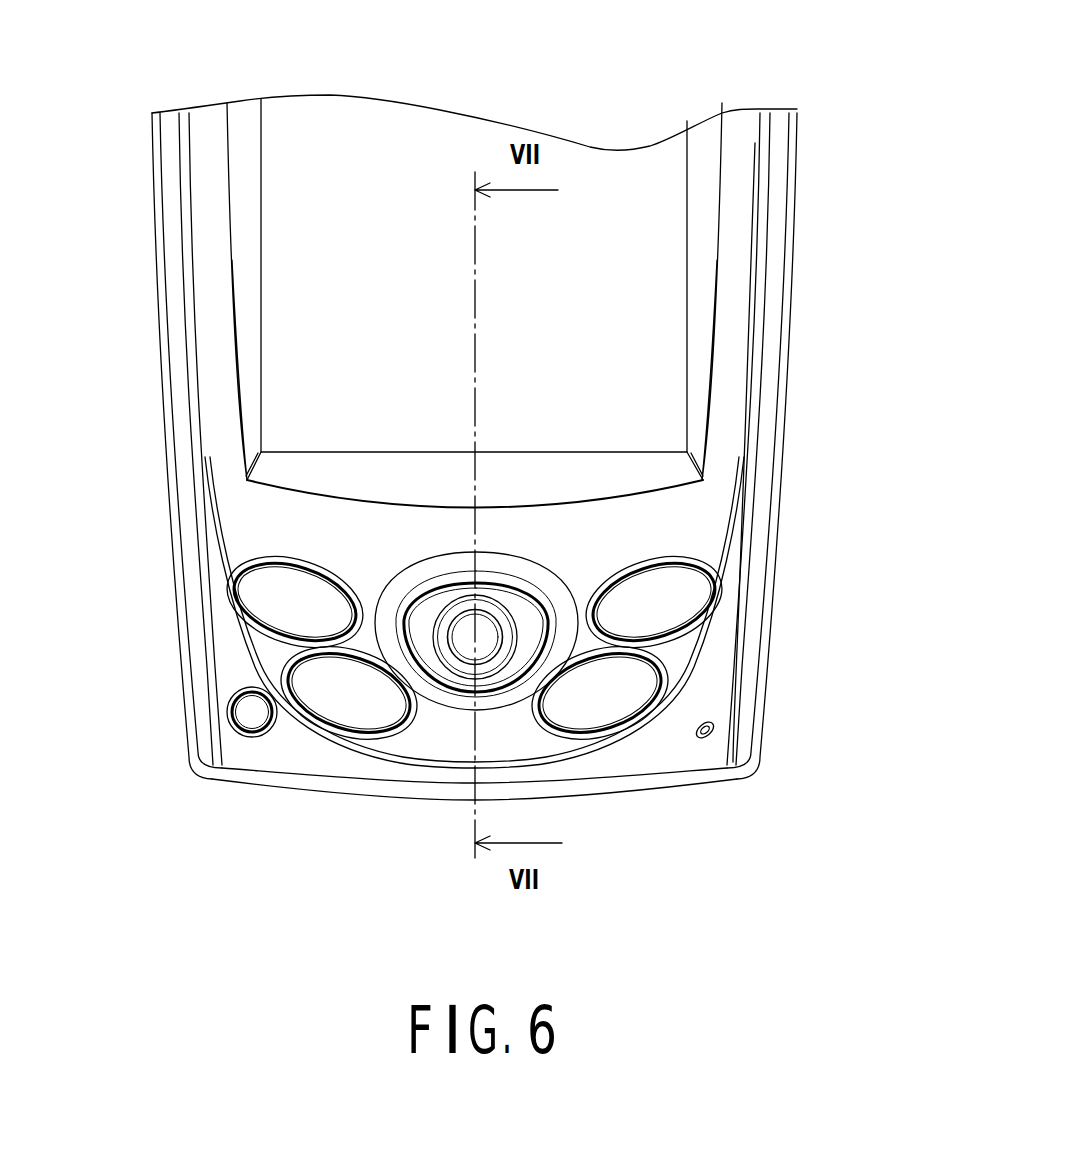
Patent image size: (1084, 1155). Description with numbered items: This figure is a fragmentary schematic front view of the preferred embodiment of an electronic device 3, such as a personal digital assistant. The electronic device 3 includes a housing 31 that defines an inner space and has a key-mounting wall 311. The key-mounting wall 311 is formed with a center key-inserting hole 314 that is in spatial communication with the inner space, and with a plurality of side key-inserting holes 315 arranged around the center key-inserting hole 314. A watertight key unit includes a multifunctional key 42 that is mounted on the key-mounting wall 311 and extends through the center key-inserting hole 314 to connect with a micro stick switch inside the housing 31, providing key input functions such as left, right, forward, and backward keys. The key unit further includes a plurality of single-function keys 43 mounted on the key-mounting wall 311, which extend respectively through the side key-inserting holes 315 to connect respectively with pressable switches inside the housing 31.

The electronic device 3 is at (800, 123).
The housing 31 is at (785, 303).
The key-mounting wall 311 is at (720, 748).
The center key-inserting hole 314 is at (455, 690).
The side key-inserting holes 315 is at (253, 563).
The multifunctional key 42 is at (465, 623).
The single-function keys 43 is at (323, 683).